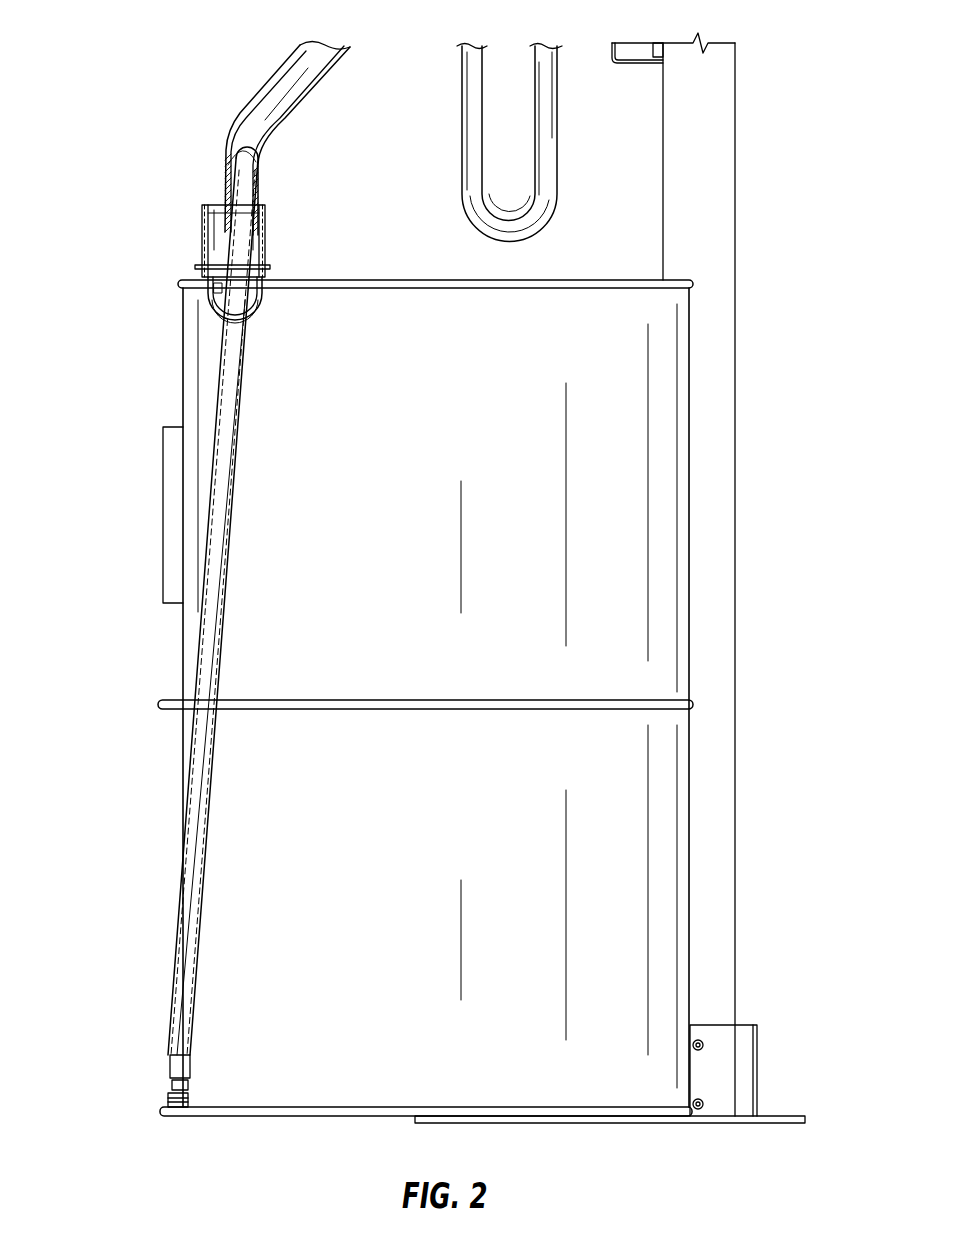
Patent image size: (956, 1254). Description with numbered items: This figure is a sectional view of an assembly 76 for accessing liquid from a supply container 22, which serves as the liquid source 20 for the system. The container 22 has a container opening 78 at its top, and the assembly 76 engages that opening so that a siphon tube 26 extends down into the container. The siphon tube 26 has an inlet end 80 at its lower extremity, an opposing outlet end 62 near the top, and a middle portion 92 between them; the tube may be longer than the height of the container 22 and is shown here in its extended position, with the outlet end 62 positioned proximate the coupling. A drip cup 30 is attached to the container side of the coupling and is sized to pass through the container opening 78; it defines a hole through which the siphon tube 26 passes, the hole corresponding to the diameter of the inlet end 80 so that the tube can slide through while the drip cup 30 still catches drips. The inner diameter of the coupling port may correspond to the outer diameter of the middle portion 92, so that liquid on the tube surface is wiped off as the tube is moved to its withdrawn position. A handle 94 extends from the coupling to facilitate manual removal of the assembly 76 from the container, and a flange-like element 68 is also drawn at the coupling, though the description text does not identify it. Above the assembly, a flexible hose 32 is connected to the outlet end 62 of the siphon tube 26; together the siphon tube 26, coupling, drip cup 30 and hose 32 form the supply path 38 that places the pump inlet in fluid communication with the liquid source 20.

The liquid source 20 is at (612, 619).
The container 22 is at (610, 550).
The siphon tube 26 is at (198, 661).
The drip cup 30 is at (248, 320).
The hose 32 is at (462, 181).
The supply path 38 is at (230, 106).
The outlet end 62 is at (237, 223).
The flange 68 is at (270, 275).
The assembly 76 is at (250, 482).
The container opening 78 is at (262, 291).
The inlet end 80 is at (165, 1097).
The middle portion 92 is at (224, 620).
The handle 94 is at (202, 225).